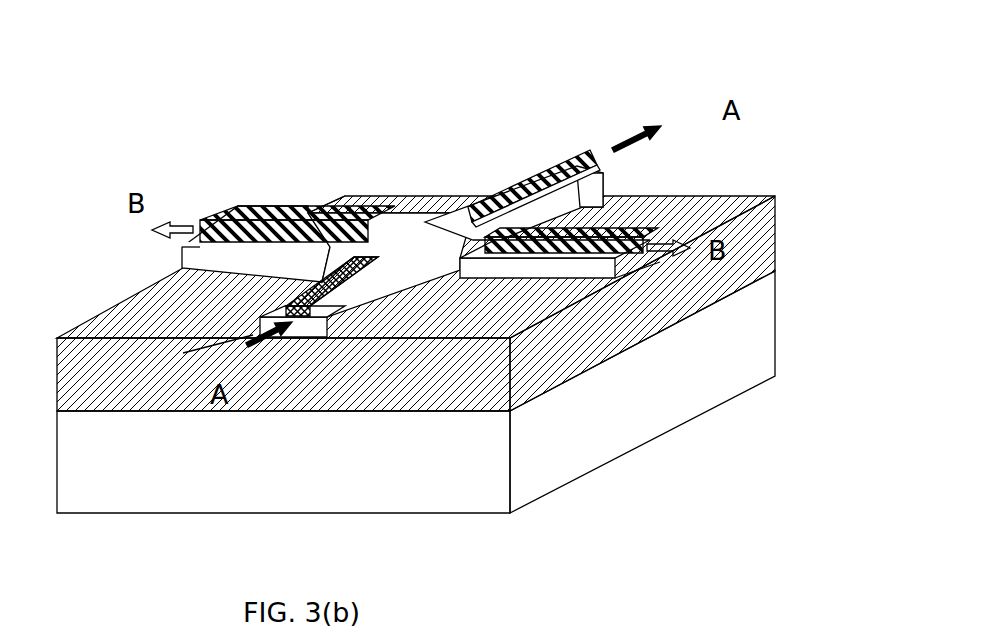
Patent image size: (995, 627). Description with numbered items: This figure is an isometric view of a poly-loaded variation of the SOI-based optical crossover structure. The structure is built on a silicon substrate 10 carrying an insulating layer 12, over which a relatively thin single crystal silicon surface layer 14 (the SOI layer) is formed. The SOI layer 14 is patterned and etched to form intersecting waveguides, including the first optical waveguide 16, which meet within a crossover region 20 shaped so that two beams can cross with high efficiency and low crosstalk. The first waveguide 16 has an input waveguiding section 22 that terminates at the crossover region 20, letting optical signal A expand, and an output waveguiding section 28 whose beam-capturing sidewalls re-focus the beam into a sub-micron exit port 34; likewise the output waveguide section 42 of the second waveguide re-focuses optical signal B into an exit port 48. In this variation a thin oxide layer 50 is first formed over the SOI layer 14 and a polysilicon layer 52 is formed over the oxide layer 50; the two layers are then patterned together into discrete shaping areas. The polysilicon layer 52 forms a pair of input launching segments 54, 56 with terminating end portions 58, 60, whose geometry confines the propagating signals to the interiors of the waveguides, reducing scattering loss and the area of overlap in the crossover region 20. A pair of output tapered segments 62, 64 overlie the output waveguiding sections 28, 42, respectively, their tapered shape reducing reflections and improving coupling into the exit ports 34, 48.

The silicon substrate 10 is at (755, 337).
The insulating layer 12 is at (753, 243).
The silicon surface layer 14 is at (632, 272).
The first optical waveguide 16 is at (172, 400).
The crossover region 20 is at (435, 238).
The input waveguiding section 22 is at (332, 337).
The output waveguiding section 28 is at (630, 192).
The exit port 34 is at (527, 215).
The output waveguide section 42 is at (253, 263).
The exit port 48 is at (183, 242).
The oxide layer 50 is at (605, 158).
The polysilicon layer 52 is at (552, 165).
The input launching segment 54 is at (353, 283).
The input launching segment 56 is at (690, 194).
The terminating end portion 58 is at (377, 263).
The terminating end portion 60 is at (475, 275).
The output tapered segment 62 is at (513, 163).
The output tapered segment 64 is at (233, 212).